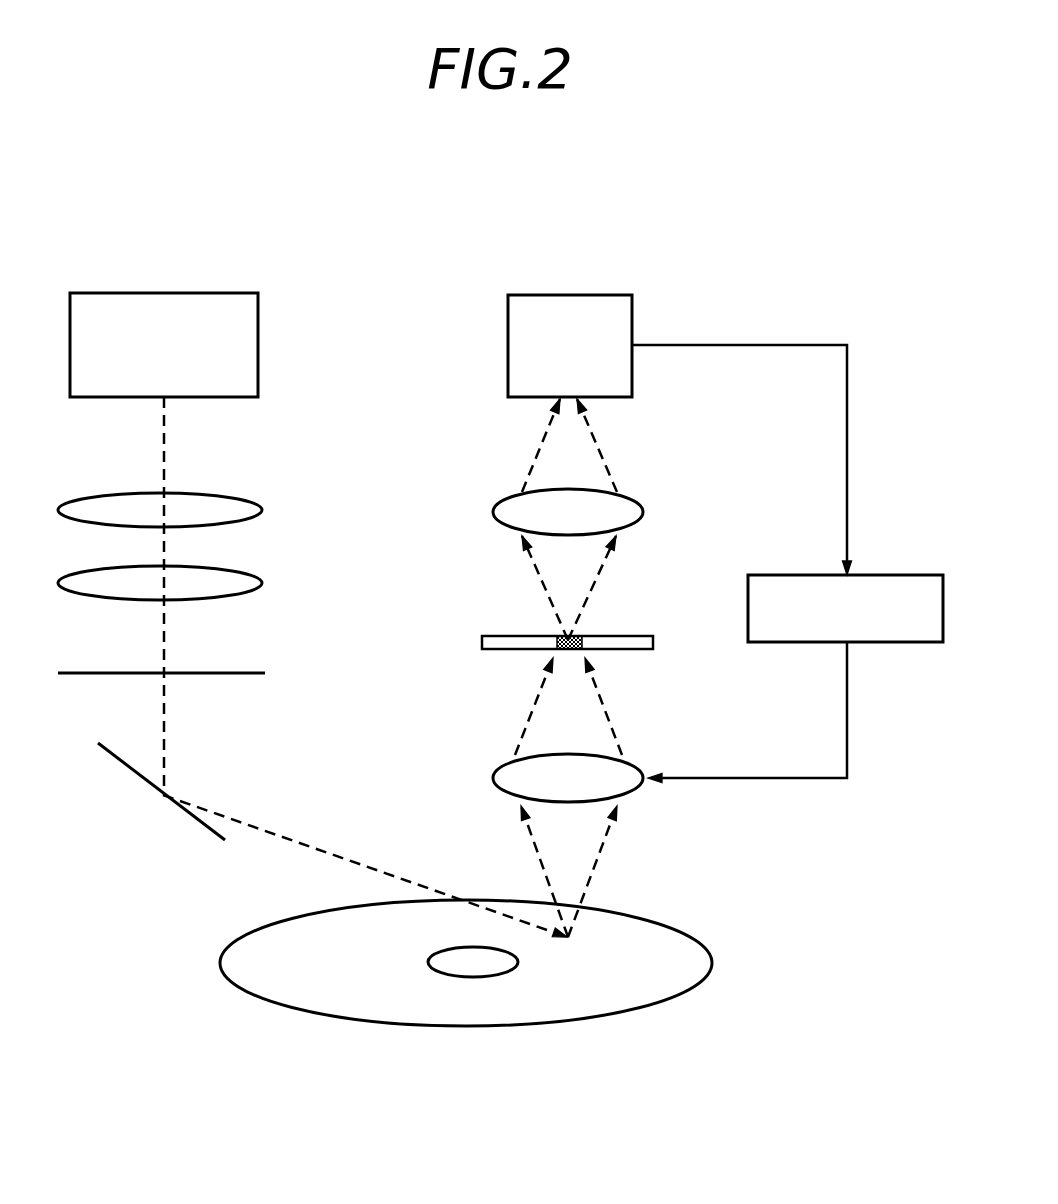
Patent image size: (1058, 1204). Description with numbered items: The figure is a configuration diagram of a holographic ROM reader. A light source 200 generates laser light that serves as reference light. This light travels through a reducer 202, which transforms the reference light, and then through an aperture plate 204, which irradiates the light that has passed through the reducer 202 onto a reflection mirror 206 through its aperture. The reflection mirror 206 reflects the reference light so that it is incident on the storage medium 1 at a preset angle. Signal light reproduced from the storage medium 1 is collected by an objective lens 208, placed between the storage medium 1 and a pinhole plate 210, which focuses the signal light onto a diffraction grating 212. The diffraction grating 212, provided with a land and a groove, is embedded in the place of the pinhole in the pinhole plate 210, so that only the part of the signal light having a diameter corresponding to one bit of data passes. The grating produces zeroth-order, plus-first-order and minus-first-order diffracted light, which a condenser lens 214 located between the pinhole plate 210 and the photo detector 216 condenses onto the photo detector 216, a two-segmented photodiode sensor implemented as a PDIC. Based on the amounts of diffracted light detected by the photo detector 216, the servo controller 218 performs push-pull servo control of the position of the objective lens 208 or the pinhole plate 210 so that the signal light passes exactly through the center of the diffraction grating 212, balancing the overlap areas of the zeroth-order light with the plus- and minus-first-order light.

The storage medium 1 is at (258, 982).
The light source 200 is at (203, 292).
The reducer 202 is at (283, 510).
The aperture plate 204 is at (243, 673).
The reflection mirror 206 is at (190, 816).
The objective lens 208 is at (640, 770).
The pinhole plate 210 is at (651, 636).
The diffraction grating 212 is at (568, 650).
The condenser lens 214 is at (637, 500).
The photo detector 216 is at (605, 294).
The servo controller 218 is at (883, 575).